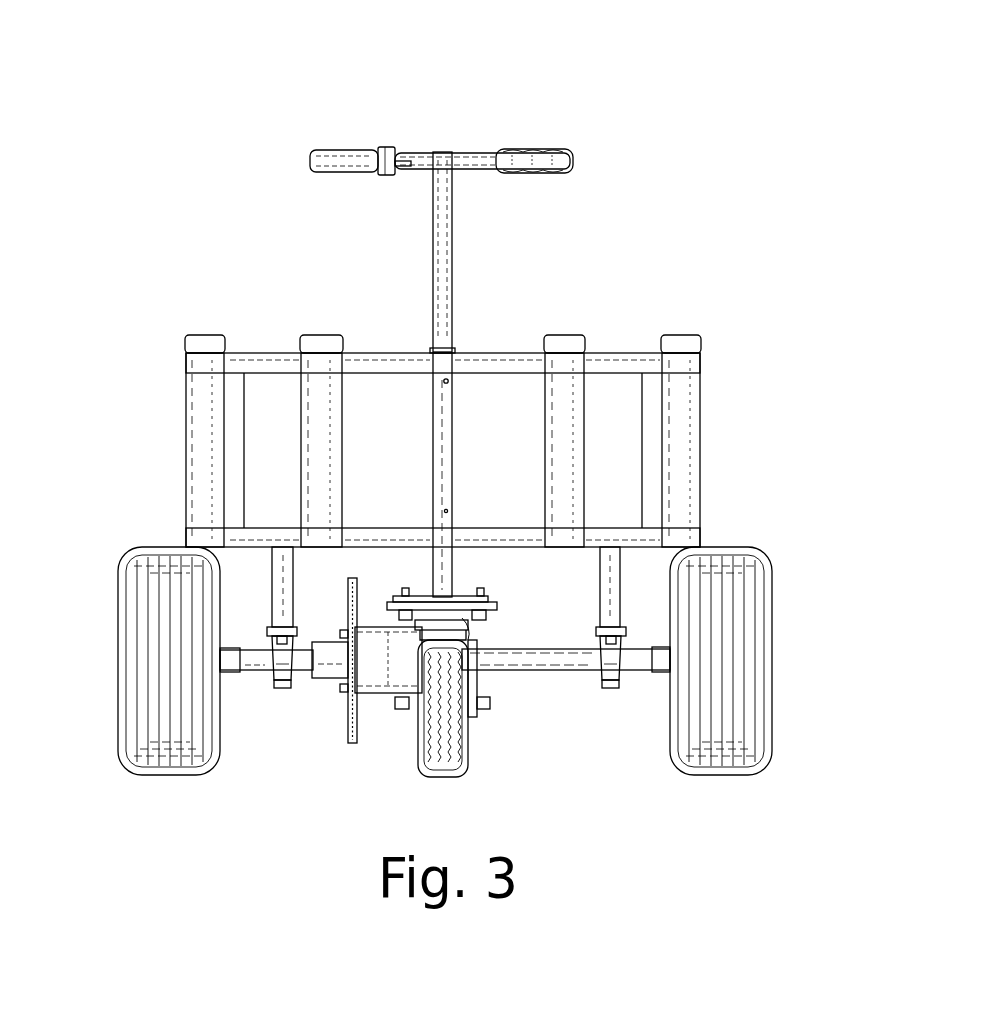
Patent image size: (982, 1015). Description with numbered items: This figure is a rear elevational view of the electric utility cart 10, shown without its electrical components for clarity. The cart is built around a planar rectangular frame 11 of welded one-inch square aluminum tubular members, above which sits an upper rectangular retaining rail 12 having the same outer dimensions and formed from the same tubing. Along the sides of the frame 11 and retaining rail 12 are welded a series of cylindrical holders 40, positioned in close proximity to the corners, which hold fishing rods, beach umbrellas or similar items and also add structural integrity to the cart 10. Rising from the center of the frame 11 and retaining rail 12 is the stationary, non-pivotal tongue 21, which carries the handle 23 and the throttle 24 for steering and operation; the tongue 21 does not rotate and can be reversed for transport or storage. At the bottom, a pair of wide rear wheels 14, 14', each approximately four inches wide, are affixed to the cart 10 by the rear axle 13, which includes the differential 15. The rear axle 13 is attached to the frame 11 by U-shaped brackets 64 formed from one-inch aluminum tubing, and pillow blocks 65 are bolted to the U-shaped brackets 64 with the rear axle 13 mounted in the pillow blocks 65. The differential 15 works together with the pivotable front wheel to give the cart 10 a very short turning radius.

The electric utility cart 10 is at (611, 84).
The planar rectangular frame 11 is at (399, 530).
The upper rectangular retaining rail 12 is at (398, 360).
The rear axle 13 is at (527, 670).
The rear wheel 14 is at (141, 661).
The rear wheel 14' is at (751, 661).
The differential 15 is at (385, 682).
The tongue 21 is at (445, 257).
The handle 23 is at (537, 150).
The throttle 24 is at (349, 150).
The cylindrical holder 40 is at (317, 425).
The U-shaped bracket 64 is at (278, 580).
The pillow block 65 is at (280, 690).